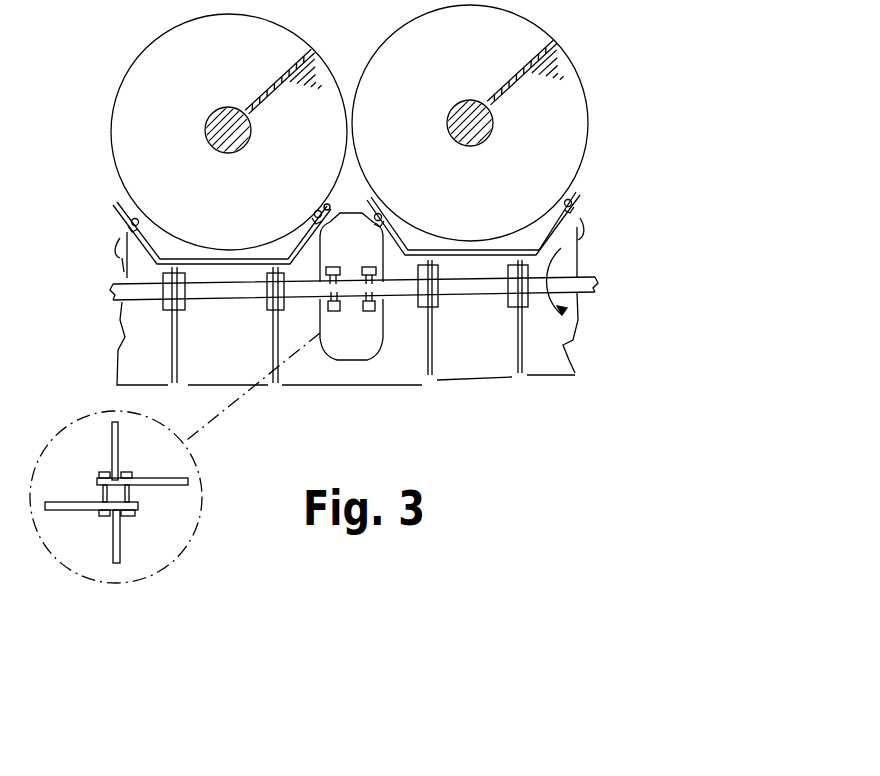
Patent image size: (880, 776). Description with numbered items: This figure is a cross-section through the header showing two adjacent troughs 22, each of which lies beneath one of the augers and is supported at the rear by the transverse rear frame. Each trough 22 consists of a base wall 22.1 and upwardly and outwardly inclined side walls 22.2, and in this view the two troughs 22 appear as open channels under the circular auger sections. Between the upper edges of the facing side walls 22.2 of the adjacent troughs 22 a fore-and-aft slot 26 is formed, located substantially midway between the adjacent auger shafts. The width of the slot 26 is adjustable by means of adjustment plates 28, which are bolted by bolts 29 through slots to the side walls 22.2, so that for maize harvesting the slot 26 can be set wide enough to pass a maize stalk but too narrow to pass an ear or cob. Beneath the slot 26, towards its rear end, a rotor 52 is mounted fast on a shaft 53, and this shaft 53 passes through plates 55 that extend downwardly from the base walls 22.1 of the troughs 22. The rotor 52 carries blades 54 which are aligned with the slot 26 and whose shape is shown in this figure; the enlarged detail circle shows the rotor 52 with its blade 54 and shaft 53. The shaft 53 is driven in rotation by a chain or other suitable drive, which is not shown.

The trough 22 is at (577, 243).
The base wall 22.1 is at (465, 257).
The side wall 22.2 is at (120, 250).
The slot 26 is at (357, 207).
The adjustment plate 28 is at (321, 206).
The bolt 29 is at (316, 212).
The rotor 52 is at (377, 357).
The shaft 53 is at (218, 292).
The blade 54 is at (353, 352).
The plate 55 is at (277, 368).